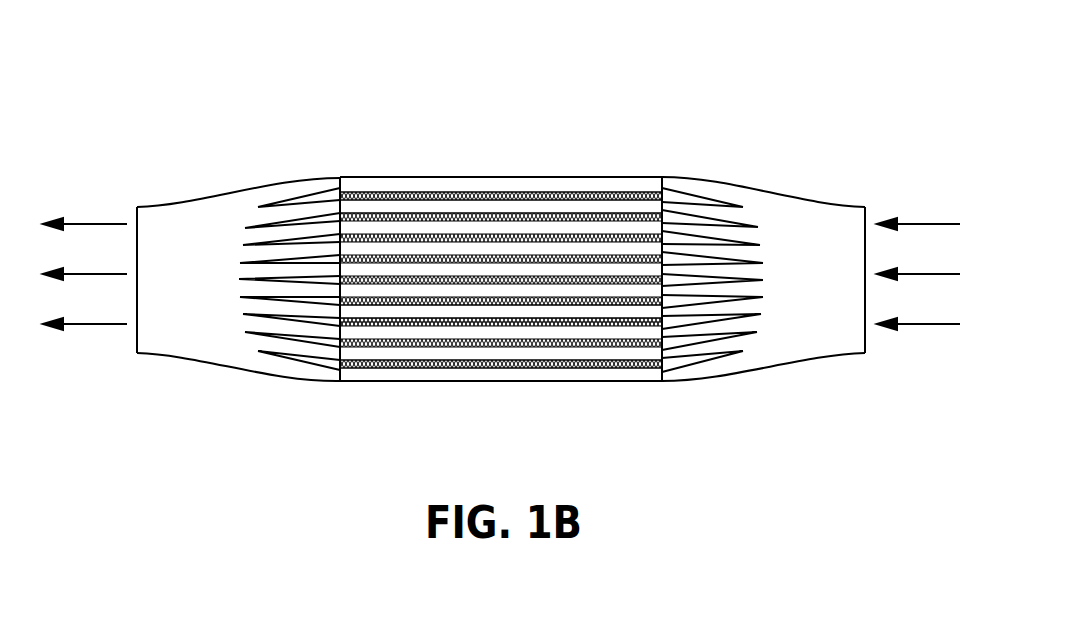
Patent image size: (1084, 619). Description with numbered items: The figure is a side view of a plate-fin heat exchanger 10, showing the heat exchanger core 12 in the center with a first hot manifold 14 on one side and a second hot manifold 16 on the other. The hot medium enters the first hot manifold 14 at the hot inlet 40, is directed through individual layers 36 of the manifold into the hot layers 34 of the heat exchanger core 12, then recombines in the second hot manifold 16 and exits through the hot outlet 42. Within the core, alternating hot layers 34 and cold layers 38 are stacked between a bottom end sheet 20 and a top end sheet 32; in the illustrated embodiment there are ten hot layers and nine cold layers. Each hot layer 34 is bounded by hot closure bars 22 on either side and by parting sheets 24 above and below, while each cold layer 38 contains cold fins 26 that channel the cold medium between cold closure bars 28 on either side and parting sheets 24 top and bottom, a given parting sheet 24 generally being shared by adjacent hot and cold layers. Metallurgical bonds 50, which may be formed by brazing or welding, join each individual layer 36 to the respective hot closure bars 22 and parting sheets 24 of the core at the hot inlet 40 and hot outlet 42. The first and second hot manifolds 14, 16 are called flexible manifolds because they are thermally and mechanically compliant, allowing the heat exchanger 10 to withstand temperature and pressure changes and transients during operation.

The heat exchanger 10 is at (685, 62).
The heat exchanger core 12 is at (487, 155).
The first hot manifold 14 is at (777, 160).
The second hot manifold 16 is at (258, 148).
The bottom end sheet 20 is at (503, 381).
The hot closure bars 22 is at (608, 207).
The parting sheets 24 is at (565, 196).
The cold fins 26 is at (518, 192).
The cold closure bars 28 is at (673, 192).
The top end sheet 32 is at (402, 177).
The hot layers 34 is at (638, 312).
The individual layers 36 is at (688, 310).
The cold layers 38 is at (602, 323).
The hot inlet 40 is at (907, 200).
The hot outlet 42 is at (118, 205).
The metallurgical bonds 50 is at (340, 177).